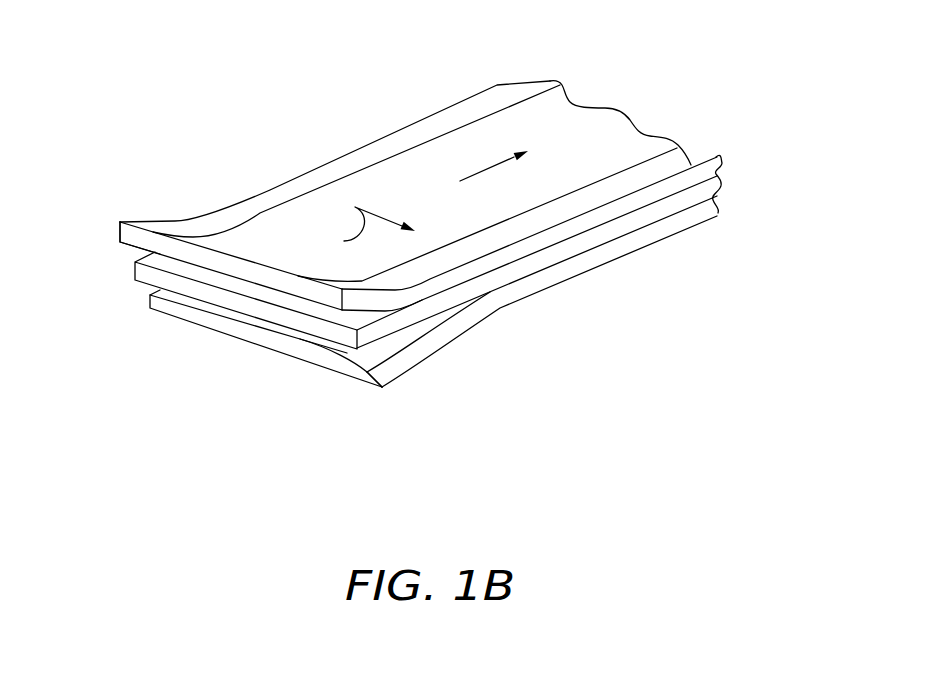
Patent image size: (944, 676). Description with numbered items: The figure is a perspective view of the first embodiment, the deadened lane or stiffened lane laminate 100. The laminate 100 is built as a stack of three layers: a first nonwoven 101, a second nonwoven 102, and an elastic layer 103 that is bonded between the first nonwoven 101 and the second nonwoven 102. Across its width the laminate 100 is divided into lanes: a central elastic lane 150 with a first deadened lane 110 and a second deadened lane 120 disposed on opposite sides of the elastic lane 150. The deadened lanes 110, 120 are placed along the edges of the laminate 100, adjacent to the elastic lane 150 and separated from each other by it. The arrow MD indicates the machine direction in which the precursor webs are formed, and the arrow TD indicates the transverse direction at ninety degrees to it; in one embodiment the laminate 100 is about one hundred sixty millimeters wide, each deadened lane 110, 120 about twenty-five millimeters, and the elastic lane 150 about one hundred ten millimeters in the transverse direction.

The deadened lane laminate 100 is at (427, 256).
The first deadened lane 110 is at (520, 84).
The elastic lane 150 is at (613, 120).
The second deadened lane 120 is at (687, 163).
The first nonwoven 101 is at (390, 365).
The second nonwoven 102 is at (118, 222).
The elastic layer 103 is at (362, 335).